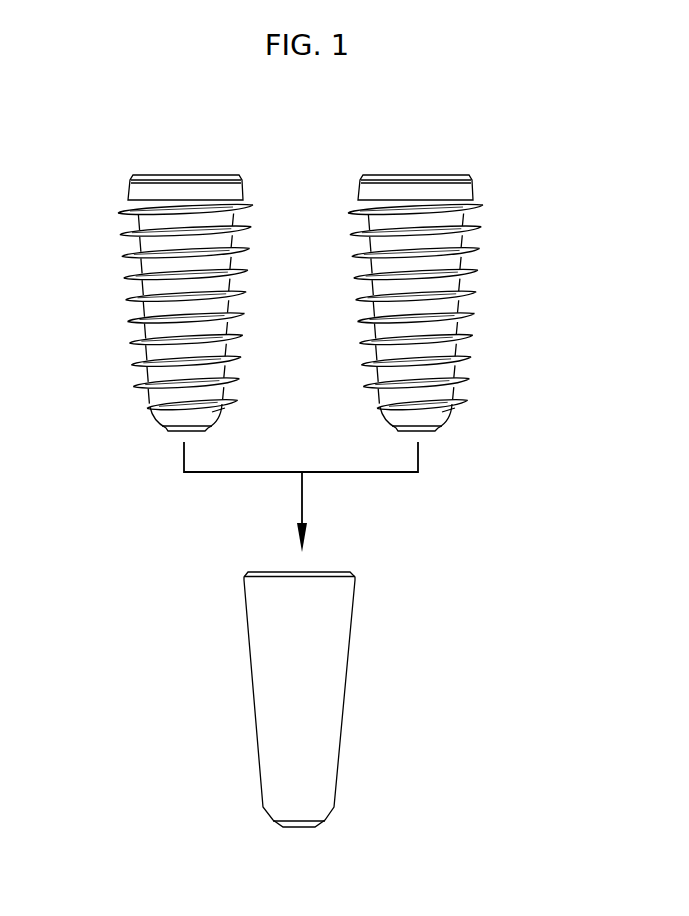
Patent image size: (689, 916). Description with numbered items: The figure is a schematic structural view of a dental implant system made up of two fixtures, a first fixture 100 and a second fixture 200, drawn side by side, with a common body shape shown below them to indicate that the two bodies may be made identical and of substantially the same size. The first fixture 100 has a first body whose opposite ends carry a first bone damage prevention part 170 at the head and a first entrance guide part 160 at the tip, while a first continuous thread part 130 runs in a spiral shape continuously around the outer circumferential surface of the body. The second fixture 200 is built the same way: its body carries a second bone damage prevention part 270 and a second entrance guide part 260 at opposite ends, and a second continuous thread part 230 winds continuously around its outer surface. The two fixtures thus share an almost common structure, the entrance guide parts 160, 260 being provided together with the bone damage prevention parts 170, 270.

The first fixture 100 is at (156, 292).
The first continuous thread part 130 is at (122, 331).
The first entrance guide part 160 is at (157, 434).
The first bone damage prevention part 170 is at (121, 196).
The second fixture 200 is at (446, 292).
The second continuous thread part 230 is at (487, 347).
The second entrance guide part 260 is at (447, 435).
The second bone damage prevention part 270 is at (481, 197).